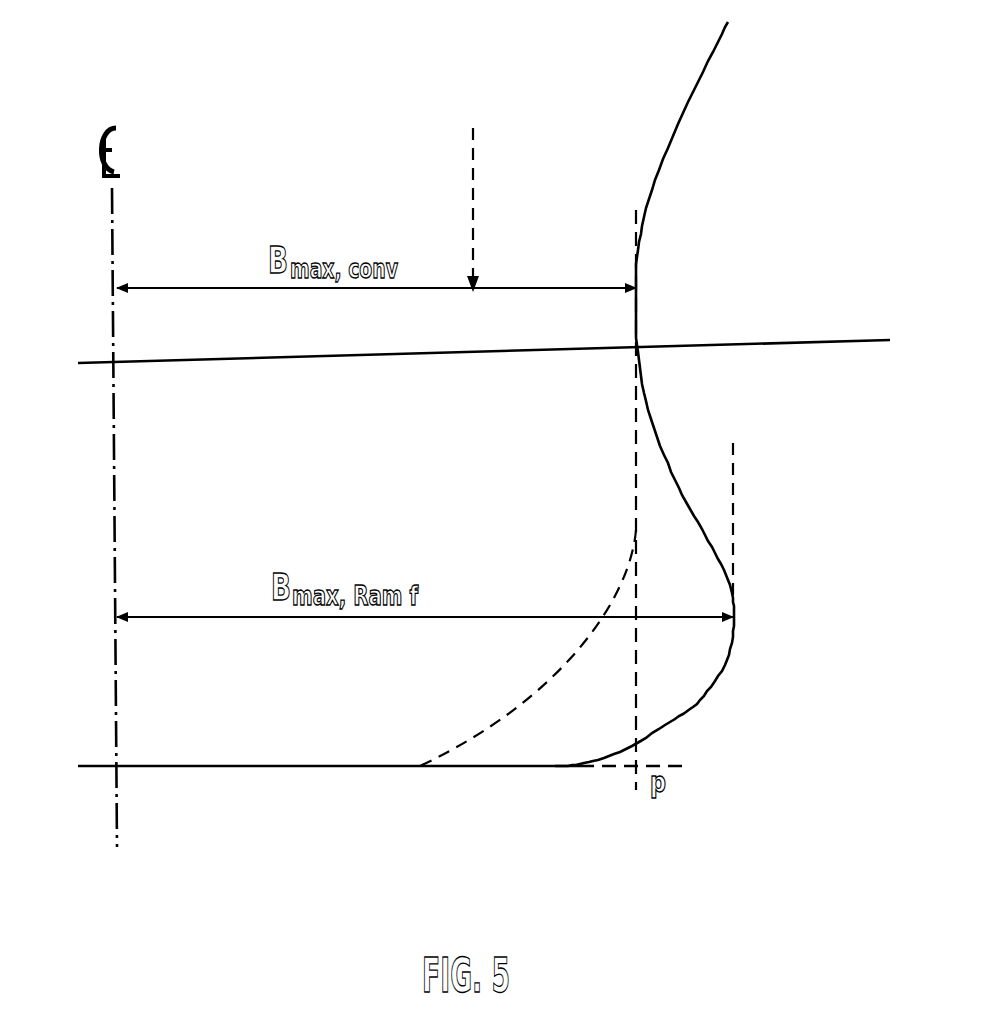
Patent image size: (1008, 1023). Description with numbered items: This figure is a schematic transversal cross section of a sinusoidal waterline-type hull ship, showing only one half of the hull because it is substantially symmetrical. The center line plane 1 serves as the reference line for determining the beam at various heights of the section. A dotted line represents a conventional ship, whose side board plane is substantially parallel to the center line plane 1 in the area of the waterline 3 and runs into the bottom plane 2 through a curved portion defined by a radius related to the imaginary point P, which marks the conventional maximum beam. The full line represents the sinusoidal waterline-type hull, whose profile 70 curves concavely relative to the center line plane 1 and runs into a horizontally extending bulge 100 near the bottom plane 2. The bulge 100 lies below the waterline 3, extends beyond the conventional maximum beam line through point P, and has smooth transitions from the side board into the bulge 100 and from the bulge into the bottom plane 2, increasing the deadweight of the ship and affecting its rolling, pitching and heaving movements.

The center line plane 1 is at (112, 240).
The bottom plane 2 is at (273, 768).
The waterline 3 is at (777, 340).
The hull profile of ship 70 is at (693, 92).
The bulge 100 is at (735, 628).